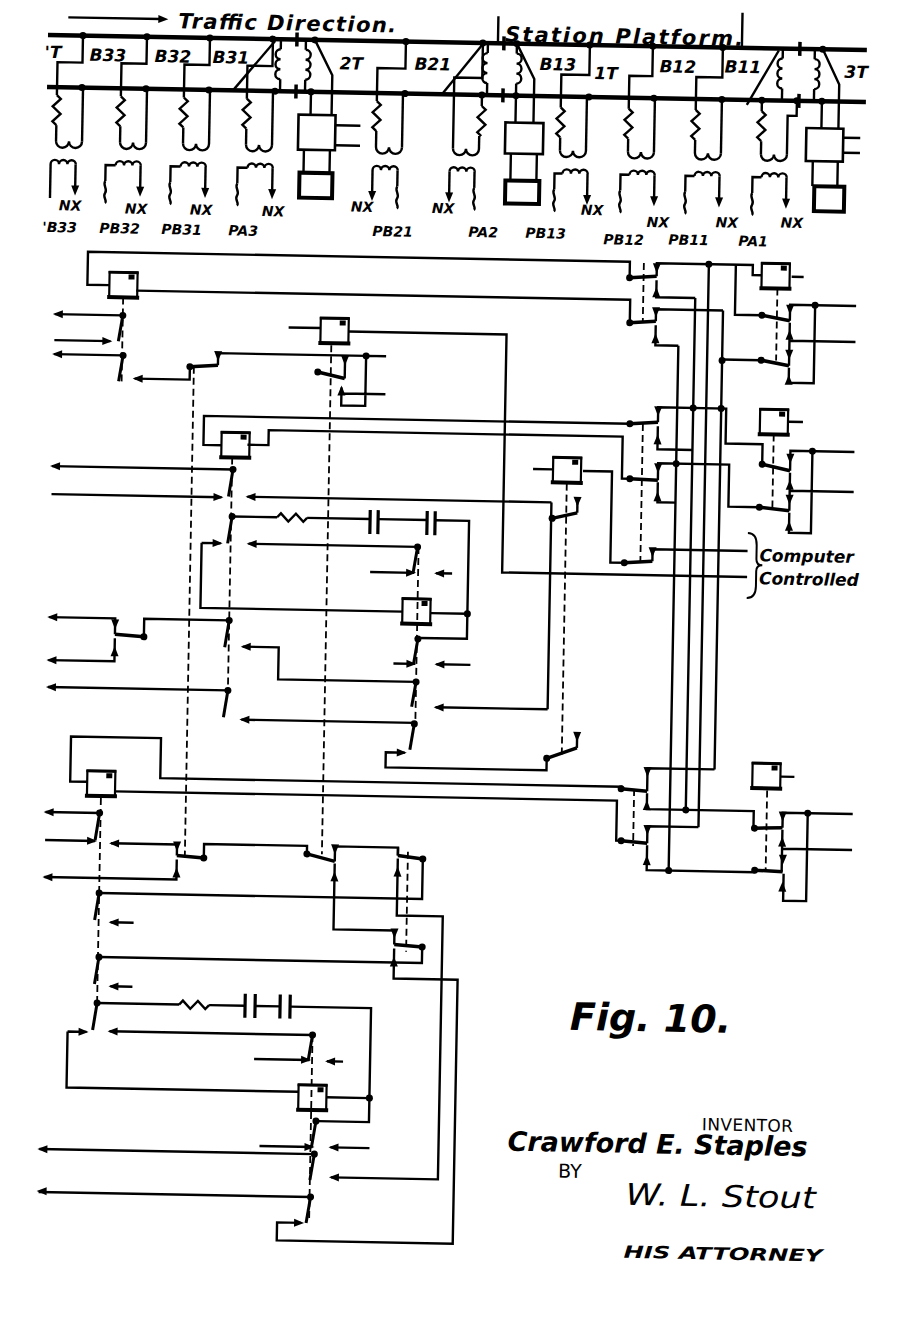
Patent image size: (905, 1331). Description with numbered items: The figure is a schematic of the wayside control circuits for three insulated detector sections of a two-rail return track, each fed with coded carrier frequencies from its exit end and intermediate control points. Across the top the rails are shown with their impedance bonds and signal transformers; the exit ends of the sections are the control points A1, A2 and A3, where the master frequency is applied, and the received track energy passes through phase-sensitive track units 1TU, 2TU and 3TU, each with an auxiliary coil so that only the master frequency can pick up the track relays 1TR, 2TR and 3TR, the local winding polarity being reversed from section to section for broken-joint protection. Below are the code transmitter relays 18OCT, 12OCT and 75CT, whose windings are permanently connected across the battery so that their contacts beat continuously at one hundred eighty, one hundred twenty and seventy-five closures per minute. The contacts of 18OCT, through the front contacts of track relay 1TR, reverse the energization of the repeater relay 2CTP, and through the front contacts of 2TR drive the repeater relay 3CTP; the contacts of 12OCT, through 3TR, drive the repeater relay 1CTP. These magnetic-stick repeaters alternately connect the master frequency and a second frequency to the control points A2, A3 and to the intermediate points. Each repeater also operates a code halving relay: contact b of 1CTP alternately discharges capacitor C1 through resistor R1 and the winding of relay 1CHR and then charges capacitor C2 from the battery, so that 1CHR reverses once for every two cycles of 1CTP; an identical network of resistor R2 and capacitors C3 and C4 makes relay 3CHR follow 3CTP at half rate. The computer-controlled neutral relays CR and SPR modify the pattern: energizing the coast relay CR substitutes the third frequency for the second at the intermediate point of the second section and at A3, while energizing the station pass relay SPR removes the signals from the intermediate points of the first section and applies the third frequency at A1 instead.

The code transmitter repeater relay 2CTP is at (334, 322).
The code transmitter repeater relay 1CTP is at (330, 571).
The code transmitter repeater relay 3CTP is at (322, 917).
The track relay 1TR is at (504, 176).
The track relay 2TR is at (334, 182).
The track relay 3TR is at (847, 196).
The track unit 1TU is at (516, 97).
The track unit 2TU is at (338, 93).
The track unit 3TU is at (837, 111).
The coast relay CR is at (495, 617).
The station pass relay SPR is at (510, 601).
The code halving relay 1CHR is at (443, 642).
The code halving relay 3CHR is at (199, 1118).
The code transmitter relay 18OCT is at (789, 314).
The code transmitter relay 12OCT is at (794, 461).
The code transmitter relay 75CT is at (784, 822).
The resistor R1 is at (277, 511).
The resistor R2 is at (153, 996).
The capacitor C1 is at (367, 514).
The capacitor C2 is at (441, 567).
The capacitor C3 is at (245, 1000).
The capacitor C4 is at (322, 1052).
The exit end control point A1 is at (753, 90).
The exit end control point A2 is at (449, 84).
The exit end control point A3 is at (243, 78).